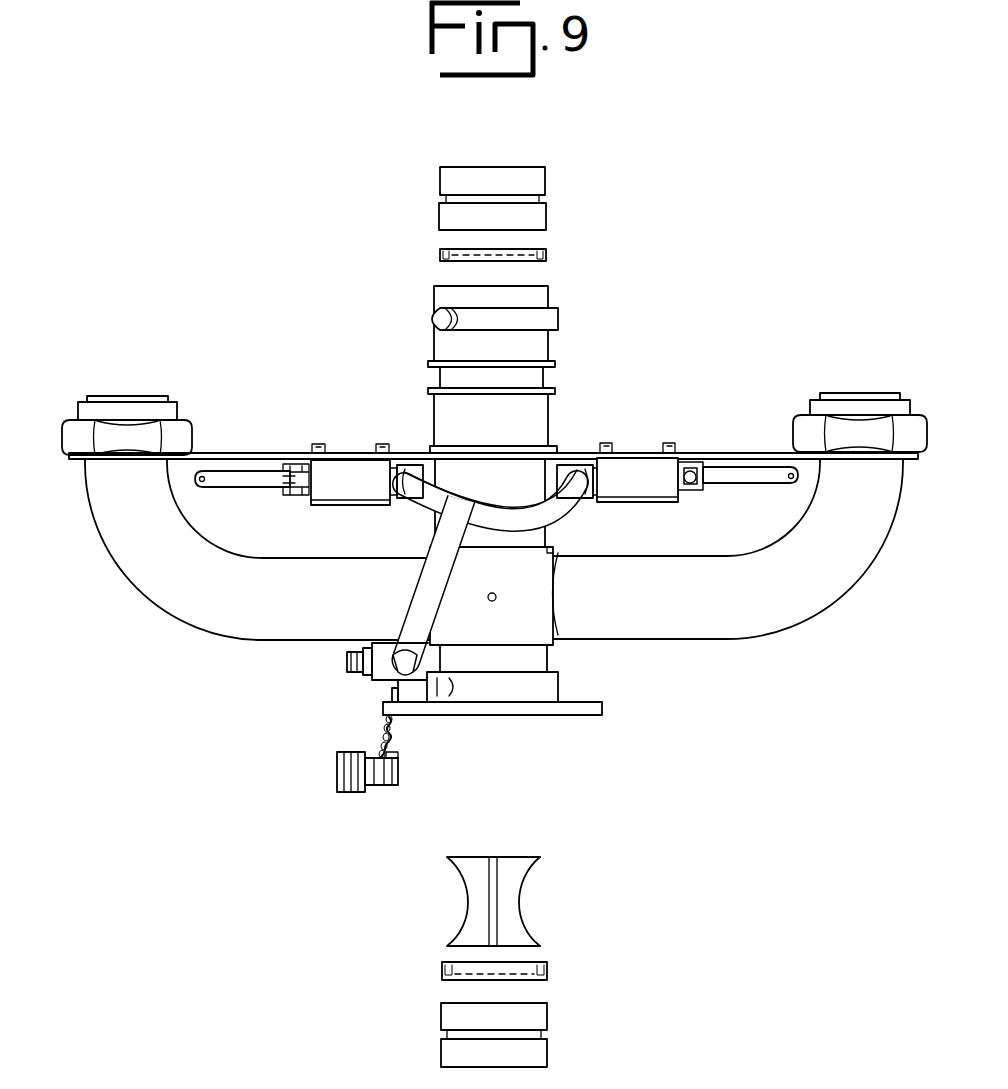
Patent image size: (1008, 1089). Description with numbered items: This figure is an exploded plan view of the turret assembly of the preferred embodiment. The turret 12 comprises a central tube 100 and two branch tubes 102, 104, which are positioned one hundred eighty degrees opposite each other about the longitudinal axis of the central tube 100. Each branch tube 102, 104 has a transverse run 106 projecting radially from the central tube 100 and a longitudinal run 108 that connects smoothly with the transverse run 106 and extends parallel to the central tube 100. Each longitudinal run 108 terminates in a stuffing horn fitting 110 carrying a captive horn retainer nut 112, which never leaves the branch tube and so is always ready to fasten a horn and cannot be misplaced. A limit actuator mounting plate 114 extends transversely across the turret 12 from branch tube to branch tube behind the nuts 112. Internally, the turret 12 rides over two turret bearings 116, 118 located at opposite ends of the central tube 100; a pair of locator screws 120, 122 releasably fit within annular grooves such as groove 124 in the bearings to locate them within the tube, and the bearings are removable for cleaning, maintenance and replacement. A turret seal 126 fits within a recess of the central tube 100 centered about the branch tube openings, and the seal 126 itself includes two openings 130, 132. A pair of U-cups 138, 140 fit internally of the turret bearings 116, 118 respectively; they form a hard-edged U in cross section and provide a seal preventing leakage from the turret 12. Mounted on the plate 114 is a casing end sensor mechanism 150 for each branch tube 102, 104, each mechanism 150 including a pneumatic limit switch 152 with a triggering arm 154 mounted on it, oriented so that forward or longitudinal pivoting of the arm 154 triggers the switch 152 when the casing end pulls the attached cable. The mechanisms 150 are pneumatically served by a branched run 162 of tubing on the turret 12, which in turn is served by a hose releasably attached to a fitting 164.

The turret 12 is at (494, 586).
The central tube 100 is at (536, 412).
The branch tube 102 is at (157, 563).
The branch tube 104 is at (863, 549).
The transverse run 106 is at (272, 642).
The longitudinal run 108 is at (96, 526).
The stuffing horn fitting 110 is at (129, 398).
The captive horn retainer nut 112 is at (176, 433).
The limit actuator mounting plate 114 is at (689, 449).
The turret bearing 116 is at (551, 1016).
The turret bearing 118 is at (550, 209).
The locator screw 120 is at (436, 694).
The locator screw 122 is at (428, 306).
The annular groove 124 is at (445, 1033).
The turret seal 126 is at (440, 200).
The opening 130 is at (466, 903).
The opening 132 is at (528, 885).
The U-cup 138 is at (546, 968).
The U-cup 140 is at (549, 253).
The casing end sensor mechanism 150 is at (358, 466).
The pneumatic limit switch 152 is at (333, 463).
The triggering arm 154 is at (226, 483).
The branched run of tubing 162 is at (428, 586).
The fitting 164 is at (380, 674).